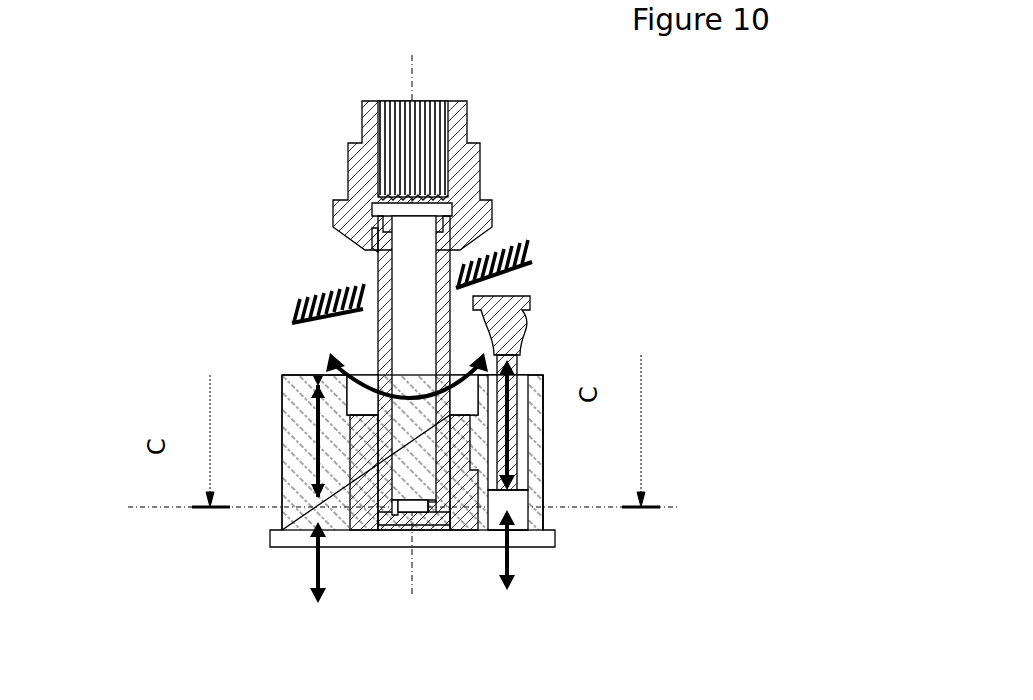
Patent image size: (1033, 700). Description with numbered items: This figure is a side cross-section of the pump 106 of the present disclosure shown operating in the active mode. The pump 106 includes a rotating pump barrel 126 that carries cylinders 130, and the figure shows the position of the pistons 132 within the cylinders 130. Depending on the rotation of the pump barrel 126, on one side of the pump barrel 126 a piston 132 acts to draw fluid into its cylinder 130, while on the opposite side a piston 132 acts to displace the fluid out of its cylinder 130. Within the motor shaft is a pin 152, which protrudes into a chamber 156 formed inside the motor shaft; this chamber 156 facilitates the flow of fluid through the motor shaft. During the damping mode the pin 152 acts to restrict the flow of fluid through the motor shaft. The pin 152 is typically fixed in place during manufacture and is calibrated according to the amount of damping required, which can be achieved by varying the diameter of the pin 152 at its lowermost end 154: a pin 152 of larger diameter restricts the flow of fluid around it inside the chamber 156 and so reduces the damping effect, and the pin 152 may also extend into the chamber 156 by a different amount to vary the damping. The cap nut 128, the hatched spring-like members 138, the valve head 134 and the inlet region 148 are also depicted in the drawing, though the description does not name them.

The pump 106 is at (285, 121).
The cap nut 128 is at (441, 125).
The spring 138 is at (527, 240).
The pin 152 is at (404, 252).
The lowermost end 154 is at (405, 505).
The valve head 134 is at (530, 295).
The piston 132 is at (530, 360).
The cylinder 130 is at (517, 515).
The pump barrel 126 is at (298, 480).
The inlet 148 is at (395, 510).
The chamber 156 is at (397, 516).